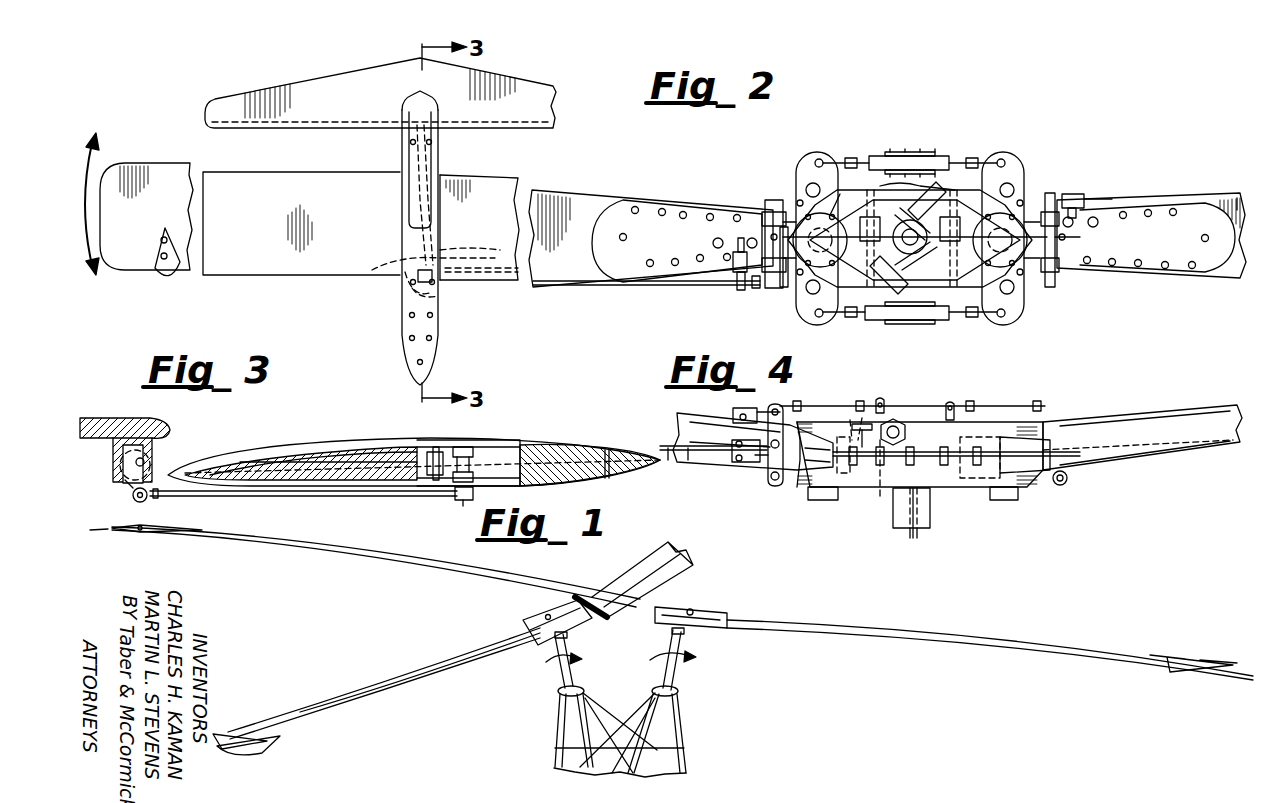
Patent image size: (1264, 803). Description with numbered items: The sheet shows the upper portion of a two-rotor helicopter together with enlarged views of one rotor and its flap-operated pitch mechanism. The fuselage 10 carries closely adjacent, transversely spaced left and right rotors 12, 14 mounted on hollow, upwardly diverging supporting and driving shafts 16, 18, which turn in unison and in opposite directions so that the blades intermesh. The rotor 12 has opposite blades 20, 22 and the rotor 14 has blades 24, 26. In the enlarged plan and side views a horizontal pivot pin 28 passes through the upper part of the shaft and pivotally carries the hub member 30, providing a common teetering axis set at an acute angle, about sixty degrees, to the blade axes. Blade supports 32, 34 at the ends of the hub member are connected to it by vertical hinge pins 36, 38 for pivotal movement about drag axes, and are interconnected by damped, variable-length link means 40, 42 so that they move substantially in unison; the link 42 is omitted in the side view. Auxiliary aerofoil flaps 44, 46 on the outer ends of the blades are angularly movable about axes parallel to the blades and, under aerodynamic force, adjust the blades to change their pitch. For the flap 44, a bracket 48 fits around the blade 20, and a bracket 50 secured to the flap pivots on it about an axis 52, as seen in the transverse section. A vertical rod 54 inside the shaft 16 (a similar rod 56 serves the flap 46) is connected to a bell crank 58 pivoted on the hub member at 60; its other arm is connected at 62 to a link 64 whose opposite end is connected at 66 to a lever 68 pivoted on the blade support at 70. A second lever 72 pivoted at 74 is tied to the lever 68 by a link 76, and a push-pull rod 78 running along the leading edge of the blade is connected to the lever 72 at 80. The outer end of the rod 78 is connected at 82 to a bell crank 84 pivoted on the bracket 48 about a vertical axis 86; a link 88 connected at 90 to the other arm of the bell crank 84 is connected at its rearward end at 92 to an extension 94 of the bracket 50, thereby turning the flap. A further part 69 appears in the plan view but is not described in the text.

In FIG. 1, the fuselage 10 is at (670, 752).
In FIG. 1, the left rotor 12 is at (723, 613).
In FIG. 1, the right rotor 14 is at (527, 623).
In FIG. 2, the left supporting and driving shaft 16 is at (910, 238).
In FIG. 4, the left supporting and driving shaft 16 is at (935, 413).
In FIG. 1, the left supporting and driving shaft 16 is at (665, 667).
In FIG. 1, the right supporting and driving shaft 18 is at (547, 667).
In FIG. 2, the blade 20 is at (294, 172).
In FIG. 3, the blade 20 is at (350, 438).
In FIG. 1, the blade 20 is at (400, 553).
In FIG. 2, the blade 22 is at (1238, 192).
In FIG. 1, the blade 22 is at (863, 623).
In FIG. 1, the blade 24 is at (410, 670).
In FIG. 1, the blade 26 is at (656, 558).
In FIG. 2, the horizontal pivot pin 28 is at (933, 193).
In FIG. 4, the horizontal pivot pin 28 is at (893, 425).
In FIG. 1, the horizontal pivot pin 28 is at (693, 610).
In FIG. 2, the hub member 30 is at (960, 187).
In FIG. 4, the hub member 30 is at (970, 427).
In FIG. 2, the blade support 32 is at (671, 208).
In FIG. 2, the blade support 34 is at (1165, 208).
In FIG. 2, the vertical hinge pin 36 is at (796, 190).
In FIG. 4, the vertical hinge pin 36 is at (842, 420).
In FIG. 2, the vertical hinge pin 38 is at (1028, 196).
In FIG. 4, the vertical hinge pin 38 is at (1017, 427).
In FIG. 2, the link means 40 is at (882, 156).
In FIG. 2, the link means 42 is at (878, 324).
In FIG. 4, the link means 42 is at (862, 435).
In FIG. 2, the auxiliary aerofoil flap 44 is at (521, 84).
In FIG. 3, the auxiliary aerofoil flap 44 is at (123, 418).
In FIG. 1, the auxiliary aerofoil flap 44 is at (176, 522).
In FIG. 1, the auxiliary aerofoil flap 46 is at (1200, 660).
In FIG. 2, the bracket 48 is at (400, 310).
In FIG. 3, the bracket 48 is at (550, 440).
In FIG. 3, the bracket 50 is at (112, 482).
In FIG. 3, the pivot axis 52 is at (157, 455).
In FIG. 2, the vertical link or rod 54 is at (920, 211).
In FIG. 4, the vertical link or rod 54 is at (927, 527).
In FIG. 2, the rod 56 is at (903, 268).
In FIG. 4, the rod 56 is at (907, 535).
In FIG. 2, the bell crank 58 is at (884, 186).
In FIG. 4, the bell crank 58 is at (862, 411).
In FIG. 4, the pivot axis 60 is at (880, 465).
In FIG. 4, the pivotal connection 62 is at (880, 400).
In FIG. 4, the link 64 is at (808, 406).
In FIG. 2, the pivotal connection 66 is at (764, 235).
In FIG. 2, the lever 68 is at (783, 285).
In FIG. 4, the lever 68 is at (765, 399).
In FIG. 2, the link 69 is at (842, 192).
In FIG. 4, the pivot axis 70 is at (777, 487).
In FIG. 2, the second lever 72 is at (738, 290).
In FIG. 4, the second lever 72 is at (717, 415).
In FIG. 4, the pivot axis 74 is at (746, 408).
In FIG. 2, the link 76 is at (757, 290).
In FIG. 4, the link 76 is at (760, 460).
In FIG. 2, the push-pull link or rod 78 is at (678, 288).
In FIG. 4, the push-pull link or rod 78 is at (700, 463).
In FIG. 4, the pivotal connection 80 is at (738, 462).
In FIG. 2, the pivotal connection 82 is at (401, 246).
In FIG. 2, the bell crank 84 is at (432, 300).
In FIG. 3, the bell crank 84 is at (433, 452).
In FIG. 2, the vertical axis 86 is at (405, 285).
In FIG. 3, the vertical axis 86 is at (473, 448).
In FIG. 2, the link 88 is at (440, 232).
In FIG. 3, the link 88 is at (383, 497).
In FIG. 2, the pivotal connection 90 is at (455, 283).
In FIG. 3, the pivotal connection 90 is at (463, 506).
In FIG. 3, the pivotal connection 92 is at (143, 502).
In FIG. 3, the extension 94 is at (132, 500).